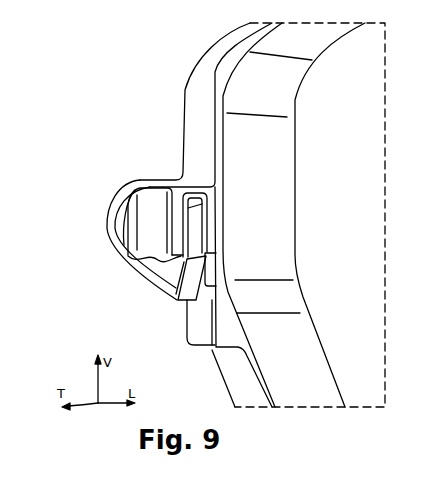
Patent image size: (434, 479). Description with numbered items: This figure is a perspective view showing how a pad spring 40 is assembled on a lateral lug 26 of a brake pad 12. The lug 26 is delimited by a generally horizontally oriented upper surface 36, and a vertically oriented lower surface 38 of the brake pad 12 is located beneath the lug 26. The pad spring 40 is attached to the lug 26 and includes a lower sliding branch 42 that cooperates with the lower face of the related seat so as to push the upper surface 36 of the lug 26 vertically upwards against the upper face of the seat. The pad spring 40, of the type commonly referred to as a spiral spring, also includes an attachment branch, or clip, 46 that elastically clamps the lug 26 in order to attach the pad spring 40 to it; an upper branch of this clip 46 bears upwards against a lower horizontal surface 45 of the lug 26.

The brake pad 12 is at (310, 215).
The lug 26 is at (153, 213).
The upper surface 36 is at (176, 180).
The lower surface 38 is at (199, 325).
The pad spring 40 is at (130, 284).
The lower sliding branch 42 is at (176, 306).
The lower horizontal surface 45 is at (142, 267).
The attachment branch 46 is at (195, 228).